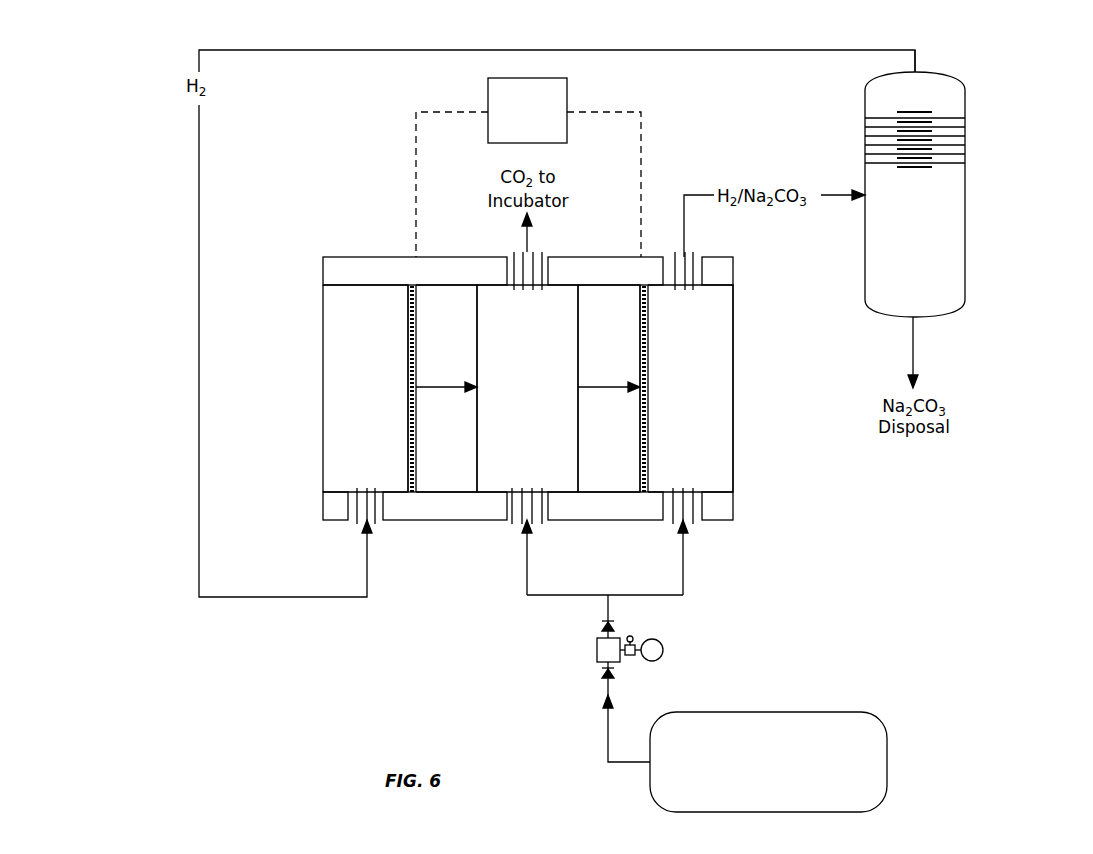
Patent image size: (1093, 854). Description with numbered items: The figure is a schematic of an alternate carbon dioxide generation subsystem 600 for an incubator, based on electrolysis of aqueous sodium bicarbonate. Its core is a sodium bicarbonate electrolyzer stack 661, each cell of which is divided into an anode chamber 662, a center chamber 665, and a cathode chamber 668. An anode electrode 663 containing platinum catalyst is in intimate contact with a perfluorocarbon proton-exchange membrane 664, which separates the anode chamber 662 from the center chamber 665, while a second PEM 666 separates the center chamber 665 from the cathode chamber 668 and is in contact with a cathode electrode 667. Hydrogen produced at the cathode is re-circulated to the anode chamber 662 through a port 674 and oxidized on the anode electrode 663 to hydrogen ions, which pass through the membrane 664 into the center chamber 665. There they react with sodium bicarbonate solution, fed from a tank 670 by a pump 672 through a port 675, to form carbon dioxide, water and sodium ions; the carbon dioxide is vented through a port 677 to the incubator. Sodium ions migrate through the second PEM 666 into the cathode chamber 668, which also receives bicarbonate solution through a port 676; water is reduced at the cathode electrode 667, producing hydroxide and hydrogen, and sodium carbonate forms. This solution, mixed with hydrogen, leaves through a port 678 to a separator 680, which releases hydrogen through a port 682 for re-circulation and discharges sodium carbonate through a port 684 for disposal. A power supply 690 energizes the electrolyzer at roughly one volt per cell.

The carbon dioxide generation subsystem 600 is at (1028, 158).
The sodium bicarbonate electrolyzer stack 661 is at (560, 397).
The anode chamber 662 is at (352, 452).
The anode electrode 663 is at (398, 319).
The proton-exchange membrane 664 is at (432, 471).
The center chamber 665 is at (513, 480).
The second PEM 666 is at (595, 471).
The cathode electrode 667 is at (660, 464).
The cathode chamber 668 is at (676, 458).
The tank 670 is at (754, 786).
The pump 672 is at (663, 650).
The port 674 is at (384, 518).
The port 675 is at (542, 518).
The port 676 is at (703, 518).
The port 677 is at (542, 263).
The port 678 is at (703, 263).
The separator 680 is at (900, 259).
The port 682 is at (915, 68).
The port 684 is at (918, 320).
The power supply 690 is at (514, 140).